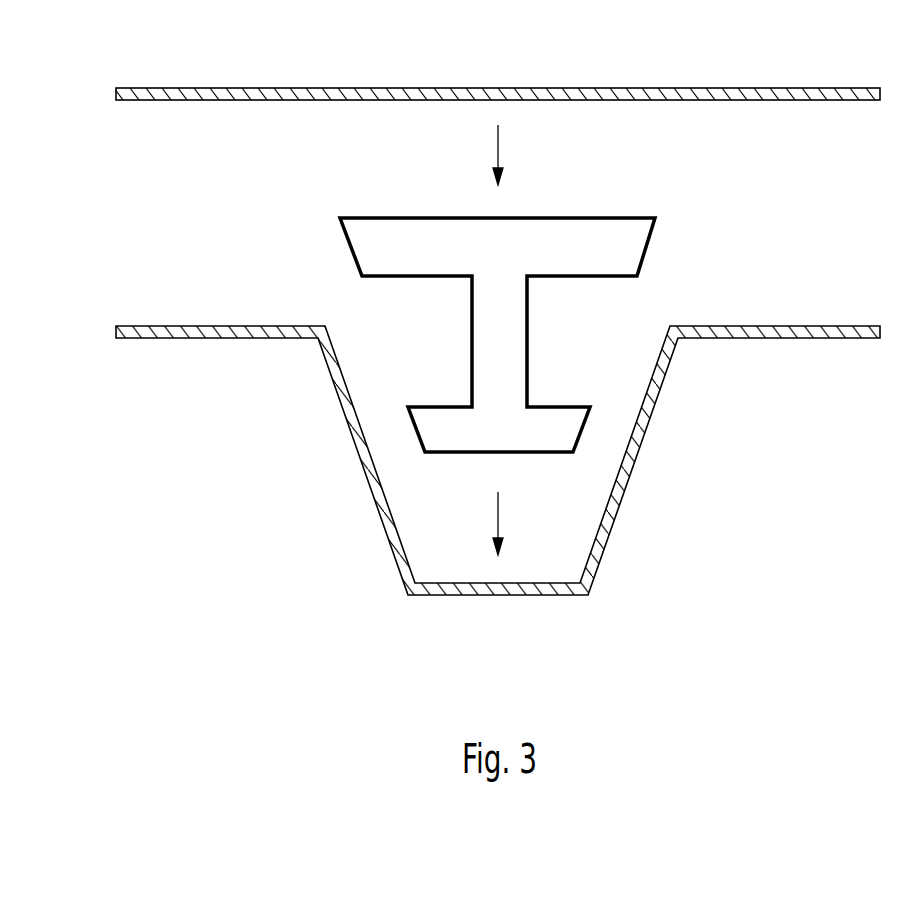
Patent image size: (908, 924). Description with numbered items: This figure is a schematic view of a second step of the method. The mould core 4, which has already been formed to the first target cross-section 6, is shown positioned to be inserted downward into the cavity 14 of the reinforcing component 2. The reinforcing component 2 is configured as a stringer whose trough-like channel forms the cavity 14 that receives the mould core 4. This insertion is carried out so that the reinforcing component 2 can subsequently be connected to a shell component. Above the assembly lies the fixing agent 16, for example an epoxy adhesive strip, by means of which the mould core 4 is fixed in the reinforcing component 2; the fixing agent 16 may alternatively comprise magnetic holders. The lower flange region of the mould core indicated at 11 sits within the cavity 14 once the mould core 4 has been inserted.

The reinforcing component 2 is at (565, 588).
The mould core 4 is at (650, 242).
The first target cross-section 6 is at (620, 367).
The lower flange of profile 11 is at (458, 430).
The cavity 14 is at (578, 507).
The fixing agent 16 is at (640, 95).